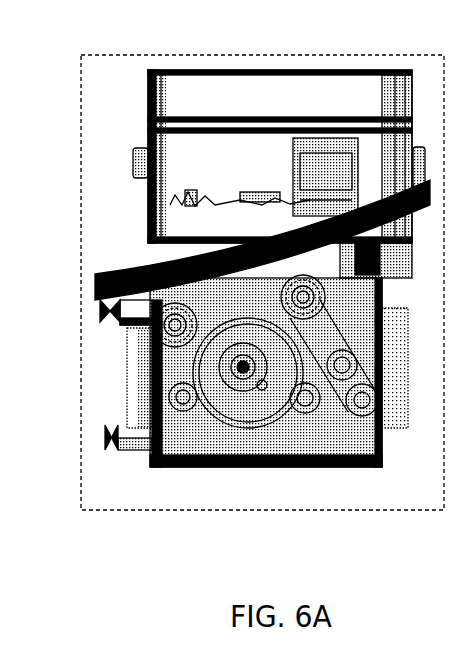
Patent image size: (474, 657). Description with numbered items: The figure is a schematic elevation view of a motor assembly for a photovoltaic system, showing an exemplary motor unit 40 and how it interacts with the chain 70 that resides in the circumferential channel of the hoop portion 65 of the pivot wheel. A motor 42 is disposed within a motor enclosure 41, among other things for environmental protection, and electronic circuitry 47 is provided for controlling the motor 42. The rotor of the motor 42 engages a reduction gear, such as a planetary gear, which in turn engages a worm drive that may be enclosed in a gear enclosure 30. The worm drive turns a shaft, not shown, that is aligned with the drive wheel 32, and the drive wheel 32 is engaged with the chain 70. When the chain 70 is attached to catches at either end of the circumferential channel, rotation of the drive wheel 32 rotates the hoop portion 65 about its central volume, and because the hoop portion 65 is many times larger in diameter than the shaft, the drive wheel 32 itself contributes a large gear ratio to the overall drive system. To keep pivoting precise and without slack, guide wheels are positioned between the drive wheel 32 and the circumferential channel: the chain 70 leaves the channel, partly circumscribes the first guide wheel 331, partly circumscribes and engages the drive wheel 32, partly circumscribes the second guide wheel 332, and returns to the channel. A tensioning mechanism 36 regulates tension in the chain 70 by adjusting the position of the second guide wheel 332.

The motor unit 40 is at (78, 79).
The motor enclosure 41 is at (207, 97).
The motor 42 is at (327, 143).
The electronic circuitry 47 is at (172, 200).
The gear enclosure 30 is at (137, 382).
The hoop portion 65 is at (92, 291).
The first guide wheel 331 is at (147, 327).
The second guide wheel 332 is at (336, 311).
The tensioning mechanism 36 is at (378, 426).
The drive wheel 32 is at (240, 382).
The chain 70 is at (261, 398).